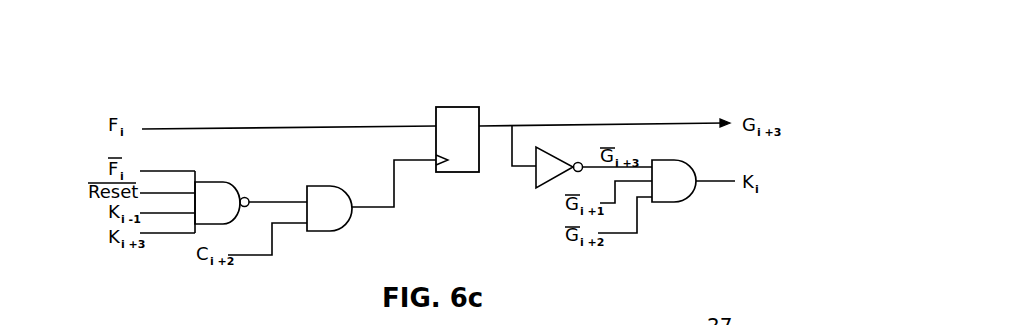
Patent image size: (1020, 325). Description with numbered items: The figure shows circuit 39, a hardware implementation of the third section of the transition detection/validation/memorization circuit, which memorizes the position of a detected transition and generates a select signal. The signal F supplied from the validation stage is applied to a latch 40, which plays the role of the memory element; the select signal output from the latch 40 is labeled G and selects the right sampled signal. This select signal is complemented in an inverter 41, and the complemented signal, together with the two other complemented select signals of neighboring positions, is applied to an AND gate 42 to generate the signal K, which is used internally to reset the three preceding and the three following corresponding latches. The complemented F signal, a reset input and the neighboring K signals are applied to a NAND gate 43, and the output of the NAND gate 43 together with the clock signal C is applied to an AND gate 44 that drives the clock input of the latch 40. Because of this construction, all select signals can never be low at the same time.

The circuit 39 is at (677, 57).
The latch 40 is at (463, 107).
The inverter 41 is at (555, 158).
The AND gate 42 is at (690, 196).
The NAND gate 43 is at (227, 182).
The AND gate 44 is at (332, 187).